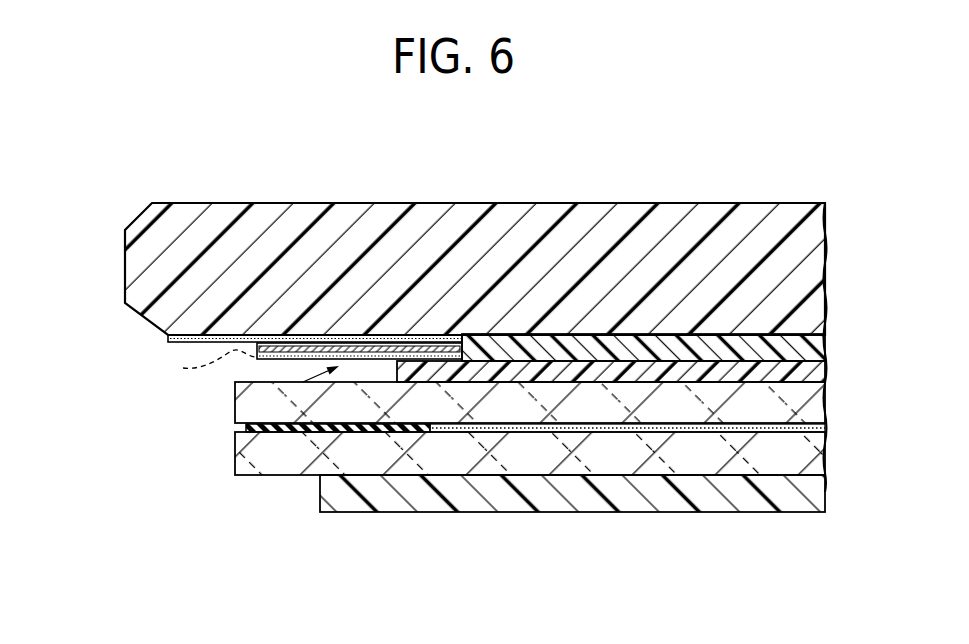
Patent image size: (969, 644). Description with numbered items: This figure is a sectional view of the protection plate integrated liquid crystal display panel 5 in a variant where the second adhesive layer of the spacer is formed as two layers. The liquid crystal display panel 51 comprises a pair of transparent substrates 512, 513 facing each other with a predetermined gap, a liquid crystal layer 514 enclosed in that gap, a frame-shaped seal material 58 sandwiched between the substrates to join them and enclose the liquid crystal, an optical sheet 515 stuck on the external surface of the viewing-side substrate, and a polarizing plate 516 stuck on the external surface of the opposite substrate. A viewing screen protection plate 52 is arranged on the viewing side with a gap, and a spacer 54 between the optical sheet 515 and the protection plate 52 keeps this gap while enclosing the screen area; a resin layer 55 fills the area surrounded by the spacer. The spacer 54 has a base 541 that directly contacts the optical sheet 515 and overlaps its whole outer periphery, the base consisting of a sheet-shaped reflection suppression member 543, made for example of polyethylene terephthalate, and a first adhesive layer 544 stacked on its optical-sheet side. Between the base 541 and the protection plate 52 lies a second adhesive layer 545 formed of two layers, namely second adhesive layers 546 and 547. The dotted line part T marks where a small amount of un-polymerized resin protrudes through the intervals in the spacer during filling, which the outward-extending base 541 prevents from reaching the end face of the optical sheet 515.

The protection plate integrated liquid crystal display panel 5 is at (568, 130).
The liquid crystal display panel 51 is at (562, 547).
The viewing screen protection plate 52 is at (813, 263).
The spacer 54 is at (235, 458).
The resin layer 55 is at (815, 344).
The seal material 58 is at (310, 433).
The transparent substrate 512 is at (812, 401).
The transparent substrate 513 is at (808, 454).
The liquid crystal layer 514 is at (815, 426).
The optical sheet 515 is at (815, 372).
The polarizing plate 516 is at (812, 491).
The base 541 is at (132, 390).
The reflection suppression member 543 is at (268, 362).
The first adhesive layer 544 is at (288, 362).
The second adhesive layer 545 is at (84, 316).
The second adhesive layer 546 is at (168, 338).
The second adhesive layer 547 is at (170, 341).
The dotted line part T is at (212, 364).